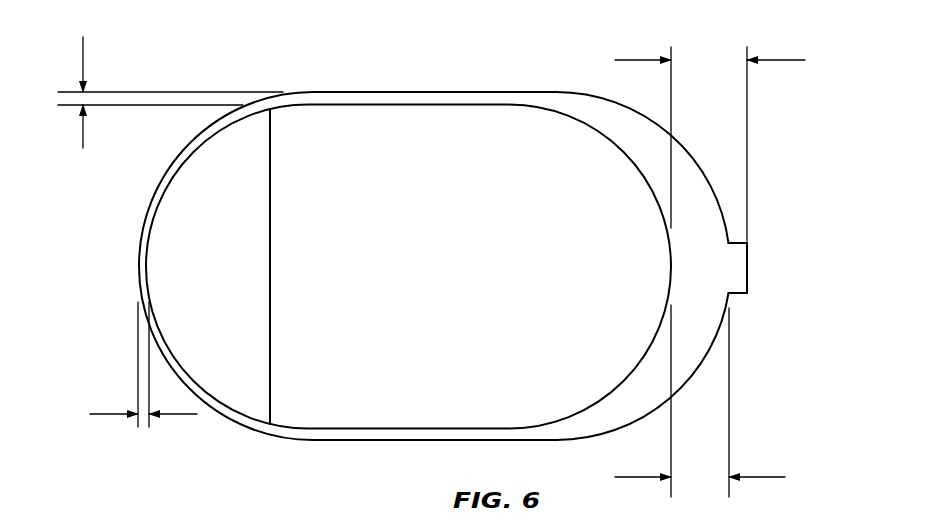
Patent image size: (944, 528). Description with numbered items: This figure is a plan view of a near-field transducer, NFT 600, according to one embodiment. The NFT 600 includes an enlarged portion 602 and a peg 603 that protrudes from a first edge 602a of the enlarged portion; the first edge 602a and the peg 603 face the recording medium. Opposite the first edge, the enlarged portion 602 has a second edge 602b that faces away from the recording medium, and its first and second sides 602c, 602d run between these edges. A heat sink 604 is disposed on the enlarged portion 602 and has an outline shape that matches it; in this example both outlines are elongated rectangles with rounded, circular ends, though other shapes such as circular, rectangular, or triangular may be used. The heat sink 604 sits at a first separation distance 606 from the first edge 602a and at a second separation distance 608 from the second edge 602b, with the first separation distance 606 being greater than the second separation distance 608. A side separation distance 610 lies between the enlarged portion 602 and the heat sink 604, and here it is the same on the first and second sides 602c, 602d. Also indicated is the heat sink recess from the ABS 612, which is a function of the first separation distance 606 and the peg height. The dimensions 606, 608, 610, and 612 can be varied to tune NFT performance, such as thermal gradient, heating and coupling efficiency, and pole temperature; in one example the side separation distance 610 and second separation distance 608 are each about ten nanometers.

The near-field transducer 600 is at (447, 268).
The enlarged portion 602 is at (428, 268).
The first edge 602a is at (720, 310).
The second edge 602b is at (141, 270).
The first side 602c is at (392, 430).
The second side 602d is at (403, 104).
The peg 603 is at (747, 270).
The heat sink 604 is at (236, 405).
The first separation distance 606 is at (720, 401).
The second separation distance 608 is at (125, 364).
The side separation distance 610 is at (170, 107).
The heat sink recess from the ABS 612 is at (732, 144).